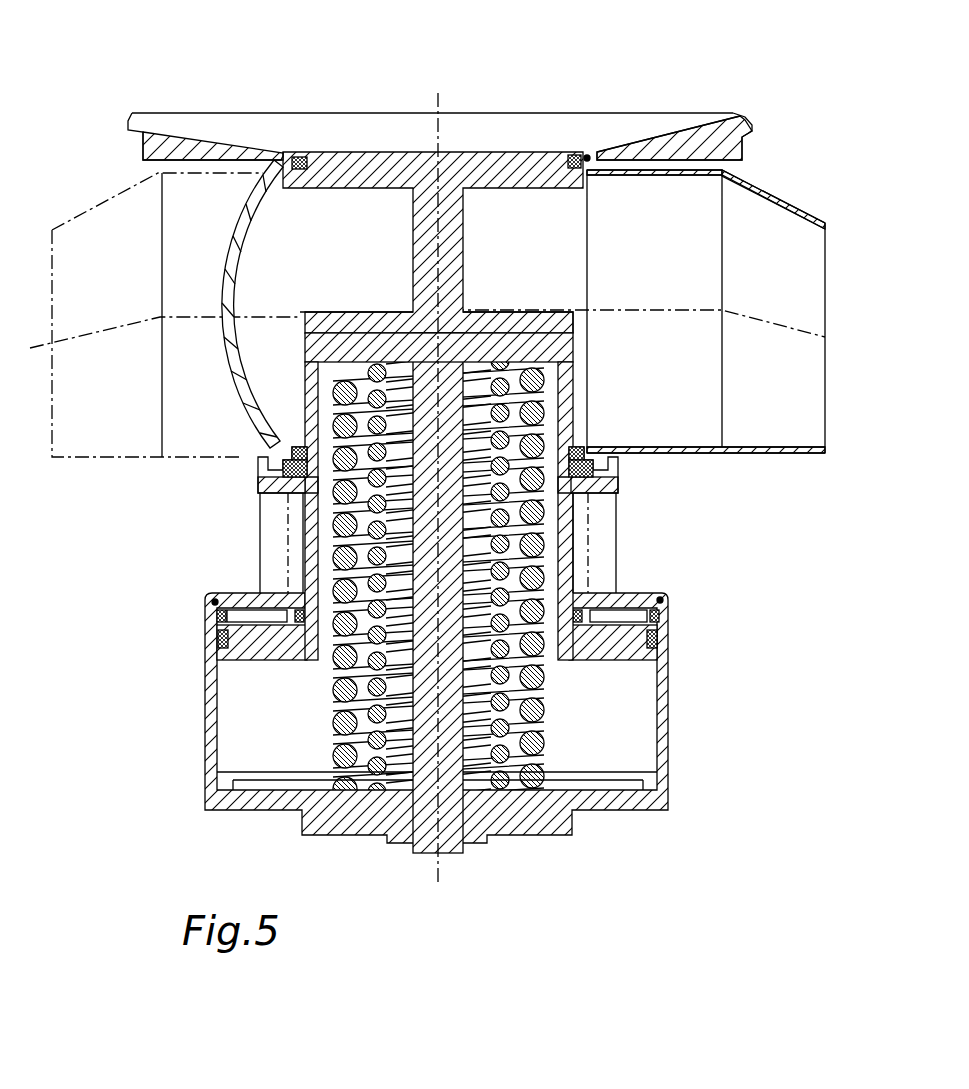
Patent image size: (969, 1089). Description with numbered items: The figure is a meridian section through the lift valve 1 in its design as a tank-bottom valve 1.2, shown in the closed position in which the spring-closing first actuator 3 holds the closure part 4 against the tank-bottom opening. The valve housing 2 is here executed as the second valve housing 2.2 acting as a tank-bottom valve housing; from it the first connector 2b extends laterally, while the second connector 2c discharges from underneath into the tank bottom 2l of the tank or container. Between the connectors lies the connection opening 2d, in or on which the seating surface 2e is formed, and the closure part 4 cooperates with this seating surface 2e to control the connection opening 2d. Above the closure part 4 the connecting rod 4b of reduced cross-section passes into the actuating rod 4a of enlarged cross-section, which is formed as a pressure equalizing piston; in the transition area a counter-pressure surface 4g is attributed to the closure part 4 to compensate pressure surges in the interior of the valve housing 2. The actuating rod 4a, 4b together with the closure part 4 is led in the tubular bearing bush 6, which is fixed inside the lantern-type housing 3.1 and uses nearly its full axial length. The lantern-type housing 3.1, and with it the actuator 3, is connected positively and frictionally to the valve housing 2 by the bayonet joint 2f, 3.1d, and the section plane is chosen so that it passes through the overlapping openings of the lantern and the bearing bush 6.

The seating surface 2e is at (373, 145).
The connection opening 2d is at (438, 137).
The closure part 4 is at (500, 173).
The second connector 2c is at (590, 152).
The tank bottom 2l is at (693, 140).
The first connector 2b is at (770, 450).
The valve housing 2 is at (174, 304).
The second valve housing 2.2 is at (227, 373).
The counter-pressure surface 4g is at (348, 315).
The actuating rod of enlarged cross-section 4a is at (574, 285).
The connecting rod of reduced cross-section 4b is at (543, 310).
The bayonet joint 2f is at (503, 488).
The bayonet joint 3.1d is at (622, 473).
The lantern-type housing 3.1 is at (260, 527).
The bearing bush 6 is at (297, 545).
The lift valve 1 is at (520, 638).
The tank-bottom valve 1.2 is at (677, 593).
The spring-closing first actuator 3 is at (675, 738).